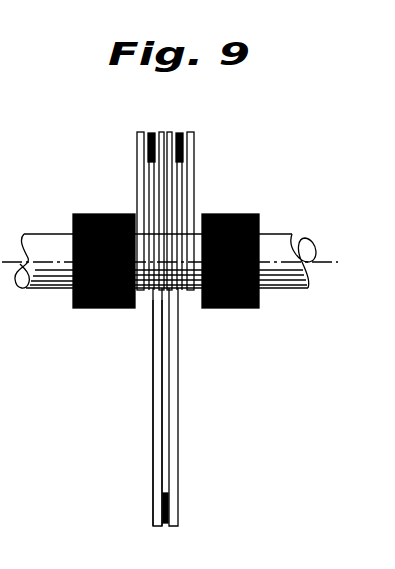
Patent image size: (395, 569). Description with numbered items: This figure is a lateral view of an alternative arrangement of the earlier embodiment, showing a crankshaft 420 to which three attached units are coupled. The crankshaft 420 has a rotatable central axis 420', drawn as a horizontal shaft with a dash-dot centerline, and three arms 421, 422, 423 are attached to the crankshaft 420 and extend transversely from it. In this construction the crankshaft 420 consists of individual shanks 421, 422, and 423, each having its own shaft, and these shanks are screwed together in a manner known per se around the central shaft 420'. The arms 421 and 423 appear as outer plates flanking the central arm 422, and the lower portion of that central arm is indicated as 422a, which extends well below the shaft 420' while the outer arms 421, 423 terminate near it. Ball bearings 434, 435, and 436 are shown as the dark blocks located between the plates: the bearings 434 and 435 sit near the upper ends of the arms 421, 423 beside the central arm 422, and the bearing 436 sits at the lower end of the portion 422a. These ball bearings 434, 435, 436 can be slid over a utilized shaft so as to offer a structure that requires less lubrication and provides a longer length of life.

The crankshaft 420 is at (170, 300).
The rotatable central axis 420' is at (288, 235).
The arm 421 is at (192, 188).
The arm 423 is at (143, 190).
The arm 422 is at (178, 398).
The inner plate lower portion 422a is at (156, 428).
The ball bearing 434 is at (195, 152).
The ball bearing 435 is at (146, 152).
The ball bearing 436 is at (156, 509).